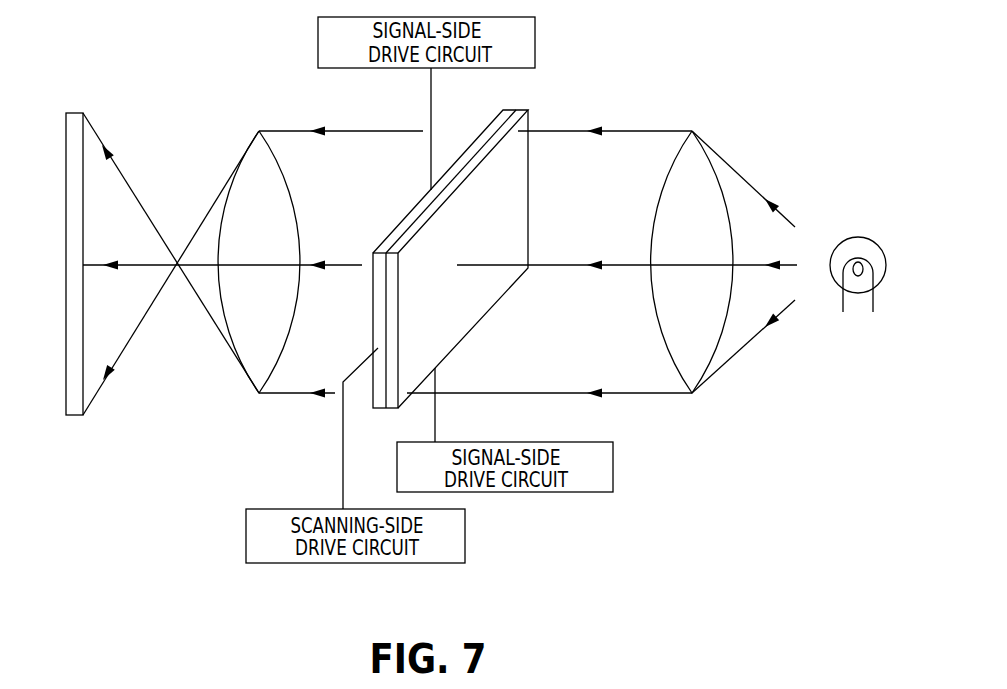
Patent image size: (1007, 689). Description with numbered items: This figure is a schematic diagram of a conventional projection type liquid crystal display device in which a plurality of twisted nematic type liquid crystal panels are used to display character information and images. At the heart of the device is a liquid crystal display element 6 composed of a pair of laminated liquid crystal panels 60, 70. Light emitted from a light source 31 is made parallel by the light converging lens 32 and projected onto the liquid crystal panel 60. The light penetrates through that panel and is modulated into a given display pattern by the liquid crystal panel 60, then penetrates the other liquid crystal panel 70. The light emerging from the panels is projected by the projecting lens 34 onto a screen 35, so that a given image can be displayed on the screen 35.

The liquid crystal display element 6 is at (506, 223).
The light source 31 is at (857, 245).
The light converging lens 32 is at (694, 152).
The projecting lens 34 is at (244, 337).
The screen 35 is at (75, 113).
The liquid crystal panel 60 is at (527, 212).
The liquid crystal panel 70 is at (418, 207).